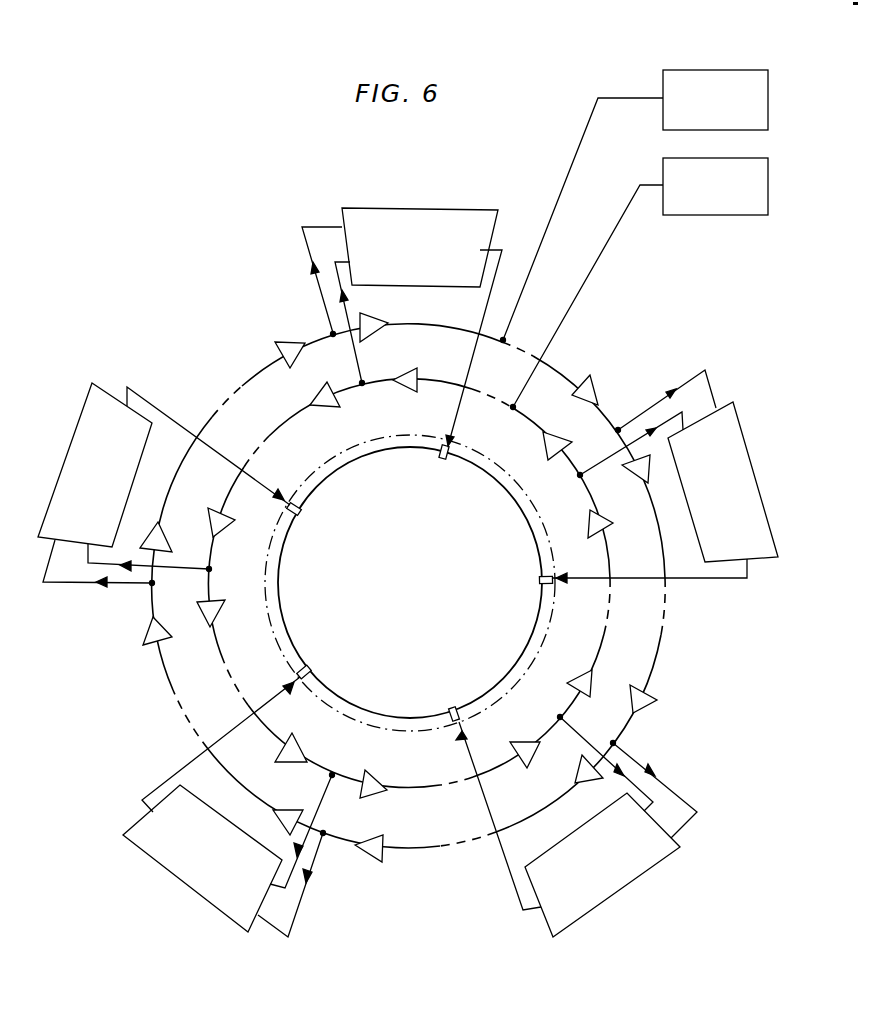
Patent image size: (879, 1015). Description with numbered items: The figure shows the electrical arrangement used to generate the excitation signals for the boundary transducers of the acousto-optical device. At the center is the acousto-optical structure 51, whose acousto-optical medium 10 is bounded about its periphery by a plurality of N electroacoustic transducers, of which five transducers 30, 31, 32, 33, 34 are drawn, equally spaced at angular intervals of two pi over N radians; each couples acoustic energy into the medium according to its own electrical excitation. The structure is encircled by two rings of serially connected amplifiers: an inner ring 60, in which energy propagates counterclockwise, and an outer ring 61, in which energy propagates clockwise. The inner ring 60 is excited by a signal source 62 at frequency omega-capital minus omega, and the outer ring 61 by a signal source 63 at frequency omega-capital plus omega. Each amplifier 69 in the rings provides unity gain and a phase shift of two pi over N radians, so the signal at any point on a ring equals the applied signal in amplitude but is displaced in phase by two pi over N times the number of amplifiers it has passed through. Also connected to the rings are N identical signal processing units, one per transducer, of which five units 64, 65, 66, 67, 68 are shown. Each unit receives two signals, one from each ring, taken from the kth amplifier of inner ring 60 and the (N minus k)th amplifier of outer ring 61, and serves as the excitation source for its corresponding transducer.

The acousto-optical medium 10 is at (519, 522).
The electroacoustic transducer 30 is at (438, 444).
The electroacoustic transducer 31 is at (285, 513).
The electroacoustic transducer 32 is at (312, 683).
The electroacoustic transducer 33 is at (451, 713).
The electroacoustic transducer 34 is at (551, 595).
The acousto-optical structure 51 is at (423, 571).
The inner ring 60 is at (428, 776).
The outer ring 61 is at (416, 852).
The signal source 62 is at (706, 217).
The signal source 63 is at (691, 68).
The signal processing unit 64 is at (462, 208).
The signal processing unit 65 is at (108, 378).
The signal processing unit 66 is at (160, 868).
The signal processing unit 67 is at (645, 878).
The signal processing unit 68 is at (742, 432).
The amplifier 69 is at (306, 382).